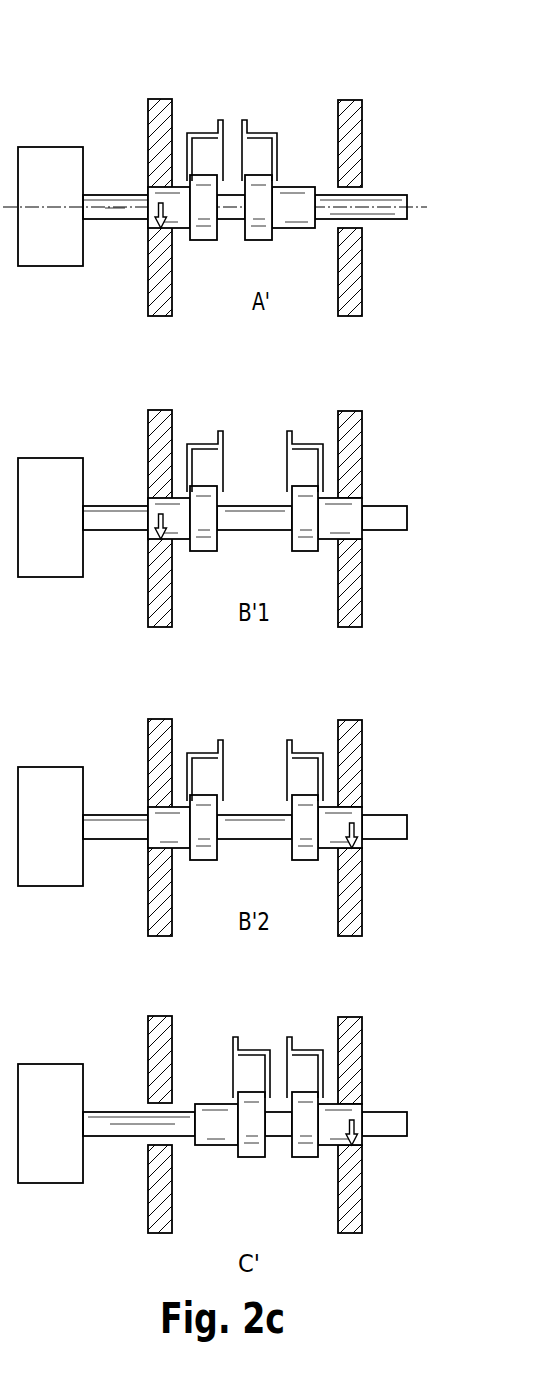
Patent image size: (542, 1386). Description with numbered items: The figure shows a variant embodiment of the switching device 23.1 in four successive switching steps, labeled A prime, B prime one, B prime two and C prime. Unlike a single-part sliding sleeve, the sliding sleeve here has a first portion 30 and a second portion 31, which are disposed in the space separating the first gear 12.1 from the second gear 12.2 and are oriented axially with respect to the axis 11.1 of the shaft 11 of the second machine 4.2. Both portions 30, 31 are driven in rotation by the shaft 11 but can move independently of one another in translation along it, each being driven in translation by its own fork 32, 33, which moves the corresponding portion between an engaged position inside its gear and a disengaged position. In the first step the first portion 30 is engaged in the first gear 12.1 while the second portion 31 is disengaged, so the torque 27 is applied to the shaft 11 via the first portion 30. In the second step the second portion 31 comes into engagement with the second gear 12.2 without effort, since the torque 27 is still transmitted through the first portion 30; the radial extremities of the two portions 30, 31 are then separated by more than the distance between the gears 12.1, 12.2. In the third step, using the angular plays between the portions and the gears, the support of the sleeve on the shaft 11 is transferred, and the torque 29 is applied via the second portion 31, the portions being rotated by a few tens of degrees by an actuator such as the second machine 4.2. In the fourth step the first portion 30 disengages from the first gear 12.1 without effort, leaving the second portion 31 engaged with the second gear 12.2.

The second machine 4.2 is at (35, 268).
The shaft 11 is at (102, 220).
The axis 11.1 is at (122, 208).
The first gear 12.1 is at (160, 103).
The second gear 12.2 is at (353, 100).
The switching device 23.1 is at (231, 55).
The torque 27 is at (157, 209).
The torque 29 is at (355, 828).
The first portion 30 is at (207, 240).
The second portion 31 is at (287, 228).
The fork 32 is at (220, 120).
The fork 33 is at (246, 122).